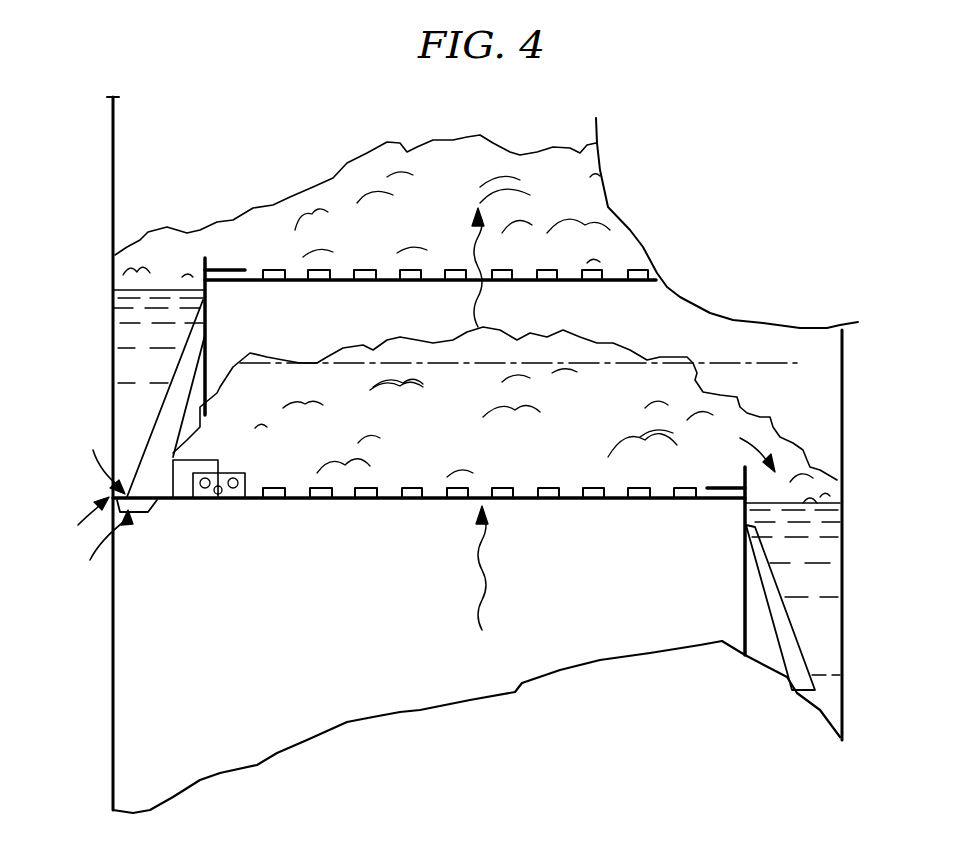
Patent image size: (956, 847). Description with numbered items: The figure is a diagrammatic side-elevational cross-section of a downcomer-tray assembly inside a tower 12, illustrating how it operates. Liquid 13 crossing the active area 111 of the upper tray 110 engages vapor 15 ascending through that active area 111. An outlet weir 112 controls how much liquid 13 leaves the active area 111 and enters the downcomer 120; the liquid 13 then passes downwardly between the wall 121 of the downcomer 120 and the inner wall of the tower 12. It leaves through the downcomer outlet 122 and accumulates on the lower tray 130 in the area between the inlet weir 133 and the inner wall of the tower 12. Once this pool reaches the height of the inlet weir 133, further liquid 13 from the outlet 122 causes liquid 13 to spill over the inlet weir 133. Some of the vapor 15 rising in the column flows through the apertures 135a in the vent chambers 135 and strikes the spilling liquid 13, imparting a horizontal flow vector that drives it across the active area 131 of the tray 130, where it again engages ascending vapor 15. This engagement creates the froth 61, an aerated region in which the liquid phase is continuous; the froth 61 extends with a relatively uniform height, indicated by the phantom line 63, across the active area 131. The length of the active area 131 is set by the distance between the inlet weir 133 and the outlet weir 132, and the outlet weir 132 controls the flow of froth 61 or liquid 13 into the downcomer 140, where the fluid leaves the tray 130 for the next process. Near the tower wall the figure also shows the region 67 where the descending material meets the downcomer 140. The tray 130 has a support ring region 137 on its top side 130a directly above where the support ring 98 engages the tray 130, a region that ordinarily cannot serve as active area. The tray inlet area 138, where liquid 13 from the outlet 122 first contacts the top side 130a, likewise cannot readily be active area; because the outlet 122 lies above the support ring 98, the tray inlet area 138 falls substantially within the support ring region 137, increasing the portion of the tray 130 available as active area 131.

The tower 12 is at (112, 370).
The liquid 13 is at (157, 283).
The vapor 15 is at (490, 300).
The froth 61 is at (738, 407).
The line 63 is at (625, 363).
The material outlet region 67 is at (810, 466).
The support ring 98 is at (147, 510).
The tray 110 is at (624, 274).
The active area 111 is at (360, 268).
The outlet weir 112 is at (207, 272).
The downcomer 120 is at (113, 334).
The wall 121 is at (212, 348).
The outlet 122 is at (82, 525).
The tray 130 is at (572, 490).
The top side 130a is at (488, 495).
The active area 131 is at (410, 488).
The outlet weir 132 is at (740, 470).
The inlet weir 133 is at (220, 466).
The vent chambers 135 is at (245, 487).
The apertures 135a is at (218, 495).
The support ring region 137 is at (97, 459).
The tray inlet area 138 is at (101, 552).
The downcomer 140 is at (838, 586).